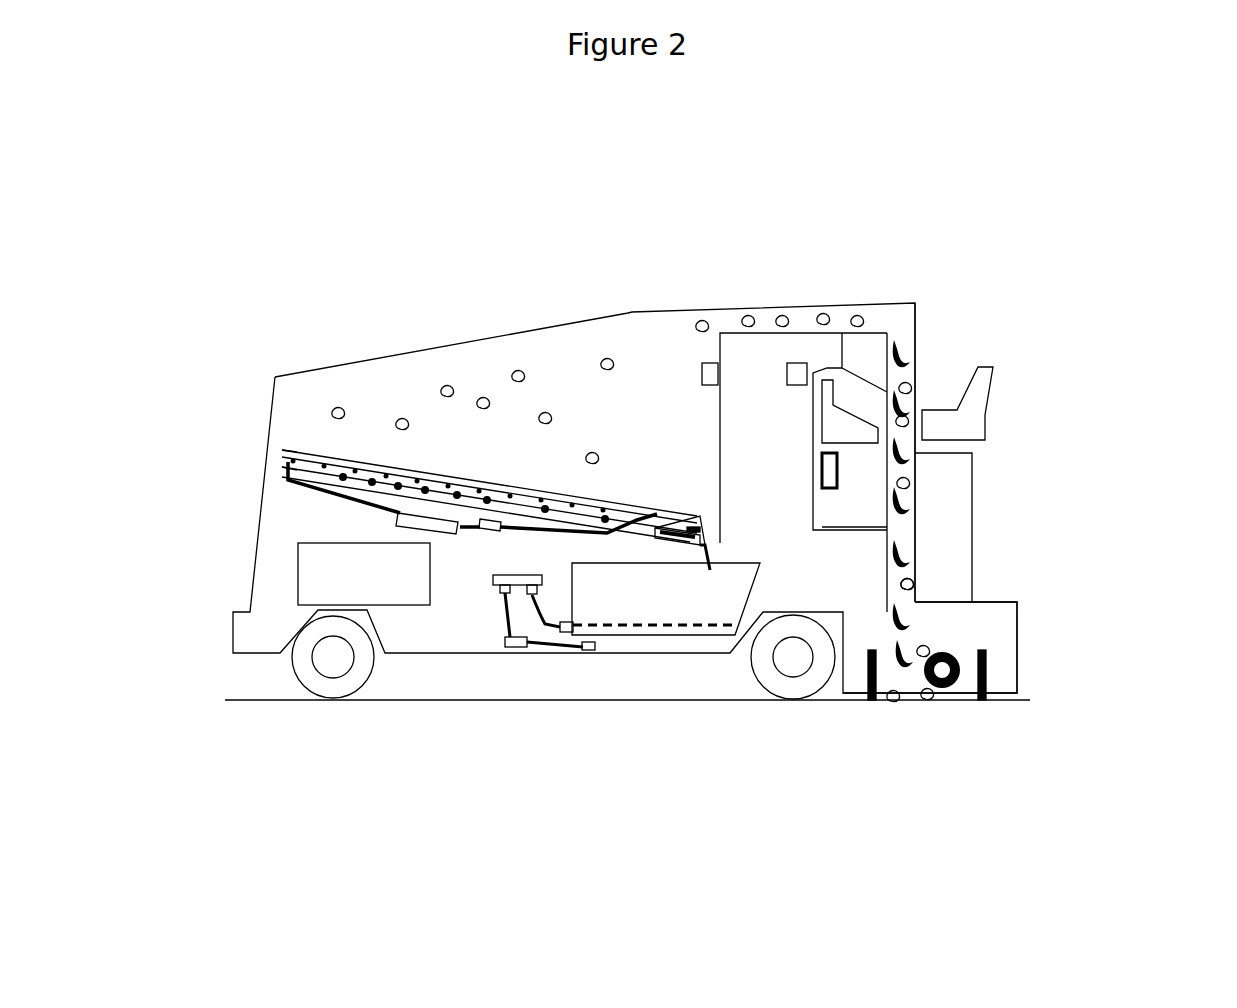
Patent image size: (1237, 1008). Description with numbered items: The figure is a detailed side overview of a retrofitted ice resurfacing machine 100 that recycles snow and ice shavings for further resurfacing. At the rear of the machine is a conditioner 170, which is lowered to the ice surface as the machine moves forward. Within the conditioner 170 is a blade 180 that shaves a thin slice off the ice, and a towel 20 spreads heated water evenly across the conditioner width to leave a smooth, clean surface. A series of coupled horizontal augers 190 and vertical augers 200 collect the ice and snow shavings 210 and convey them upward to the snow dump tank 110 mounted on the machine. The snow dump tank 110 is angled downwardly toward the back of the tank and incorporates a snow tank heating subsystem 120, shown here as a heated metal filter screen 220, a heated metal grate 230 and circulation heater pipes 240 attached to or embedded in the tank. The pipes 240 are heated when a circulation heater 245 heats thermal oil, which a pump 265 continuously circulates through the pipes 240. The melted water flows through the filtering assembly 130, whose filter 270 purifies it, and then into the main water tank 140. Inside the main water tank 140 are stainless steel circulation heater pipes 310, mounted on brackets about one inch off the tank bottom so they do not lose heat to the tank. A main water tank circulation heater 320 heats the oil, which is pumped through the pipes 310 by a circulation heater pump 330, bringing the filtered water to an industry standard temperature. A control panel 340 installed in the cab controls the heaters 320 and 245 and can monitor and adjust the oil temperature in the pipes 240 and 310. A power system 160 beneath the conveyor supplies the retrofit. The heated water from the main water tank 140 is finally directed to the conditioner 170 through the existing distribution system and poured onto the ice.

The ice resurfacing machine 100 is at (921, 218).
The snow dump tank 110 is at (476, 375).
The snow tank heating subsystem 120 is at (296, 443).
The heated metal filter screen 220 is at (278, 457).
The circulation heater pipe 240 is at (283, 468).
The heated metal grate 230 is at (340, 478).
The circulation heater 245 is at (412, 522).
The pump 265 is at (487, 528).
The power system 160 is at (293, 590).
The main water tank circulation heater 320 is at (497, 593).
The circulation heater pump 330 is at (510, 654).
The circulation heater pipes 310 is at (628, 634).
The filtering assembly 130 is at (658, 545).
The filter 270 is at (685, 542).
The main water tank 140 is at (703, 638).
The vertical augers 200 is at (924, 546).
The ice and snow shavings 210 is at (918, 588).
The conditioner 170 is at (1021, 655).
The towel 20 is at (992, 687).
The blade 180 is at (864, 699).
The horizontal augers 190 is at (954, 692).
The control panel 340 is at (846, 473).